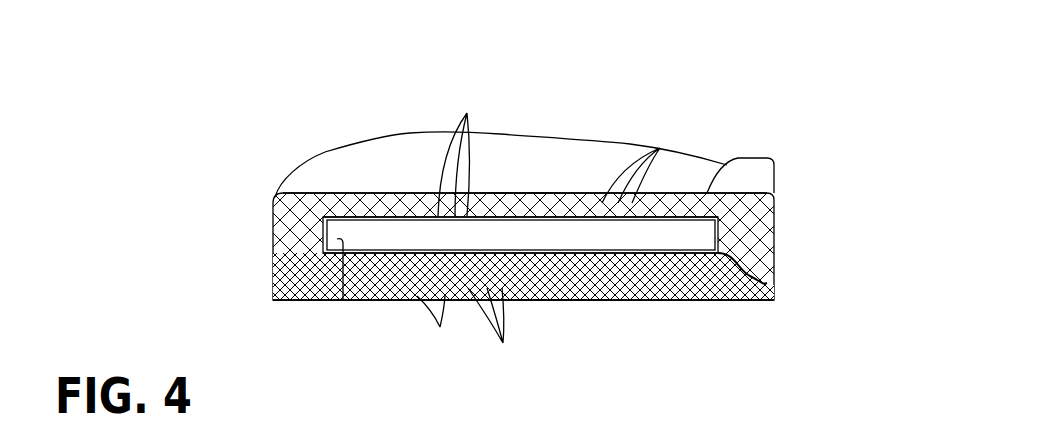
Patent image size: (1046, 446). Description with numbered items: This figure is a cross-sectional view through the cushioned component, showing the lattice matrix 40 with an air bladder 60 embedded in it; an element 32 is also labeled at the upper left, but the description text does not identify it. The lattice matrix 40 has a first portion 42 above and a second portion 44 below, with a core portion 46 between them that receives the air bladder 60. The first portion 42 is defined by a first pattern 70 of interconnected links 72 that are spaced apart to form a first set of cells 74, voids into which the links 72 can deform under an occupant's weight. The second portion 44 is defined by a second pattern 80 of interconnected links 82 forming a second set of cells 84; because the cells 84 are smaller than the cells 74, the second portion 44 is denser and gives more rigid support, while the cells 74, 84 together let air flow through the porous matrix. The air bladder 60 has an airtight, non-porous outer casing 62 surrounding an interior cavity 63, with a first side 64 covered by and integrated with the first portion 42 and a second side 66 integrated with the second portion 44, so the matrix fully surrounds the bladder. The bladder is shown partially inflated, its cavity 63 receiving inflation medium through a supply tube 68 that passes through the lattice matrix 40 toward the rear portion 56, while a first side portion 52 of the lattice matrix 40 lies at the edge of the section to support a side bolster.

The sensor assembly 32 is at (485, 231).
The lattice matrix 40 is at (263, 225).
The first portion 42 is at (572, 192).
The second portion 44 is at (670, 300).
The core portion 46 is at (315, 248).
The first side portion 52 is at (292, 168).
The rear portion 56 is at (750, 160).
The air bladder 60 is at (356, 214).
The outer casing 62 is at (373, 217).
The interior cavity 63 is at (343, 300).
The first side 64 is at (397, 217).
The second side 66 is at (382, 256).
The supply tube 68 is at (757, 259).
The first pattern 70 is at (520, 193).
The interconnected links 72 is at (467, 113).
The first set of cells 74 is at (660, 148).
The second pattern 80 is at (562, 300).
The interconnected links 82 is at (503, 343).
The second set of cells 84 is at (440, 327).